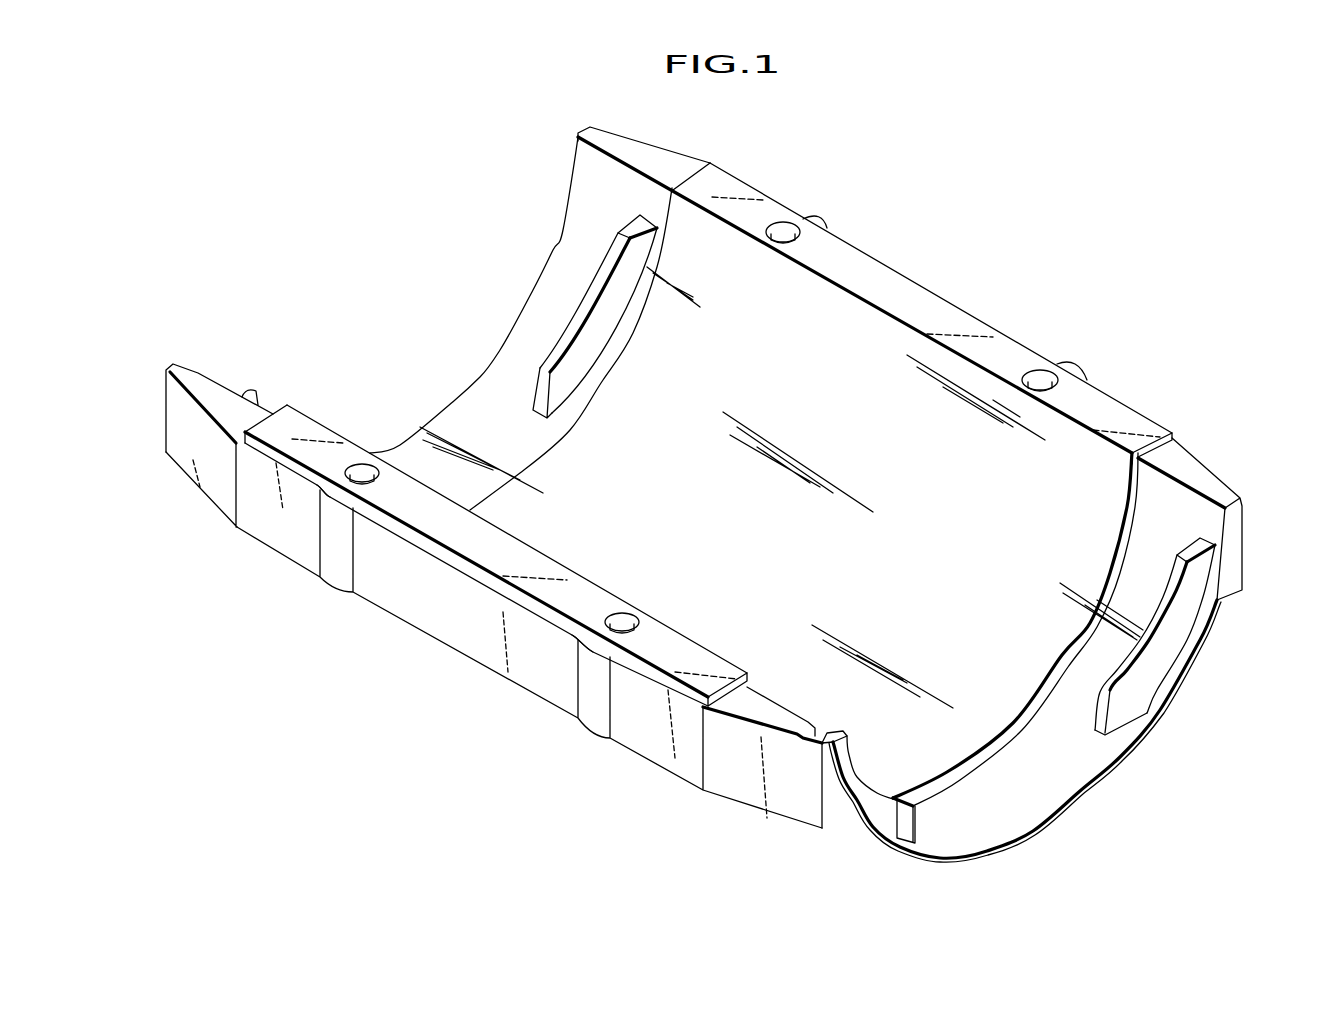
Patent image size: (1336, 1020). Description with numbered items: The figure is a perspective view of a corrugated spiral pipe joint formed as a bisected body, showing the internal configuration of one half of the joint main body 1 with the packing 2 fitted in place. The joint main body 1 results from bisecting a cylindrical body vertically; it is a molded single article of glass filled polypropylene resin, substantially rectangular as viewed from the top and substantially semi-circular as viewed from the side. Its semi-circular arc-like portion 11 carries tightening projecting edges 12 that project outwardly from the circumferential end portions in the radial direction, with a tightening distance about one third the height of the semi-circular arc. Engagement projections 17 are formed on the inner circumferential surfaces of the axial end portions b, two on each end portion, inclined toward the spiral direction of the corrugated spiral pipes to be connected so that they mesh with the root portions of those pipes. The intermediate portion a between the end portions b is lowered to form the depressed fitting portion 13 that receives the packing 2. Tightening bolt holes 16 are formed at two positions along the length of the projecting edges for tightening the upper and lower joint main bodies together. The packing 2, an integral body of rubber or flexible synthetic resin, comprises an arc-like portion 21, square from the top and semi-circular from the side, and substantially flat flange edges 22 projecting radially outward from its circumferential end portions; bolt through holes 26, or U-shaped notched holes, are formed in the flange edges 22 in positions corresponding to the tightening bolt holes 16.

The joint main body 1 is at (1257, 546).
The watertightness-implementing packing 2 is at (968, 243).
The semi-circular arc-like portion 11 is at (1010, 828).
The tightening projecting edge 12 is at (1023, 343).
The depressed fitting portion 13 is at (1020, 720).
The tightening bolt hole 16 is at (785, 224).
The bolt through hole 26 is at (796, 229).
The engagement projection 17 is at (603, 327).
The arc-like portion 21 is at (807, 290).
The flange edge 22 is at (893, 285).
The intermediate portion a is at (1133, 403).
The axial end portion b is at (670, 155).